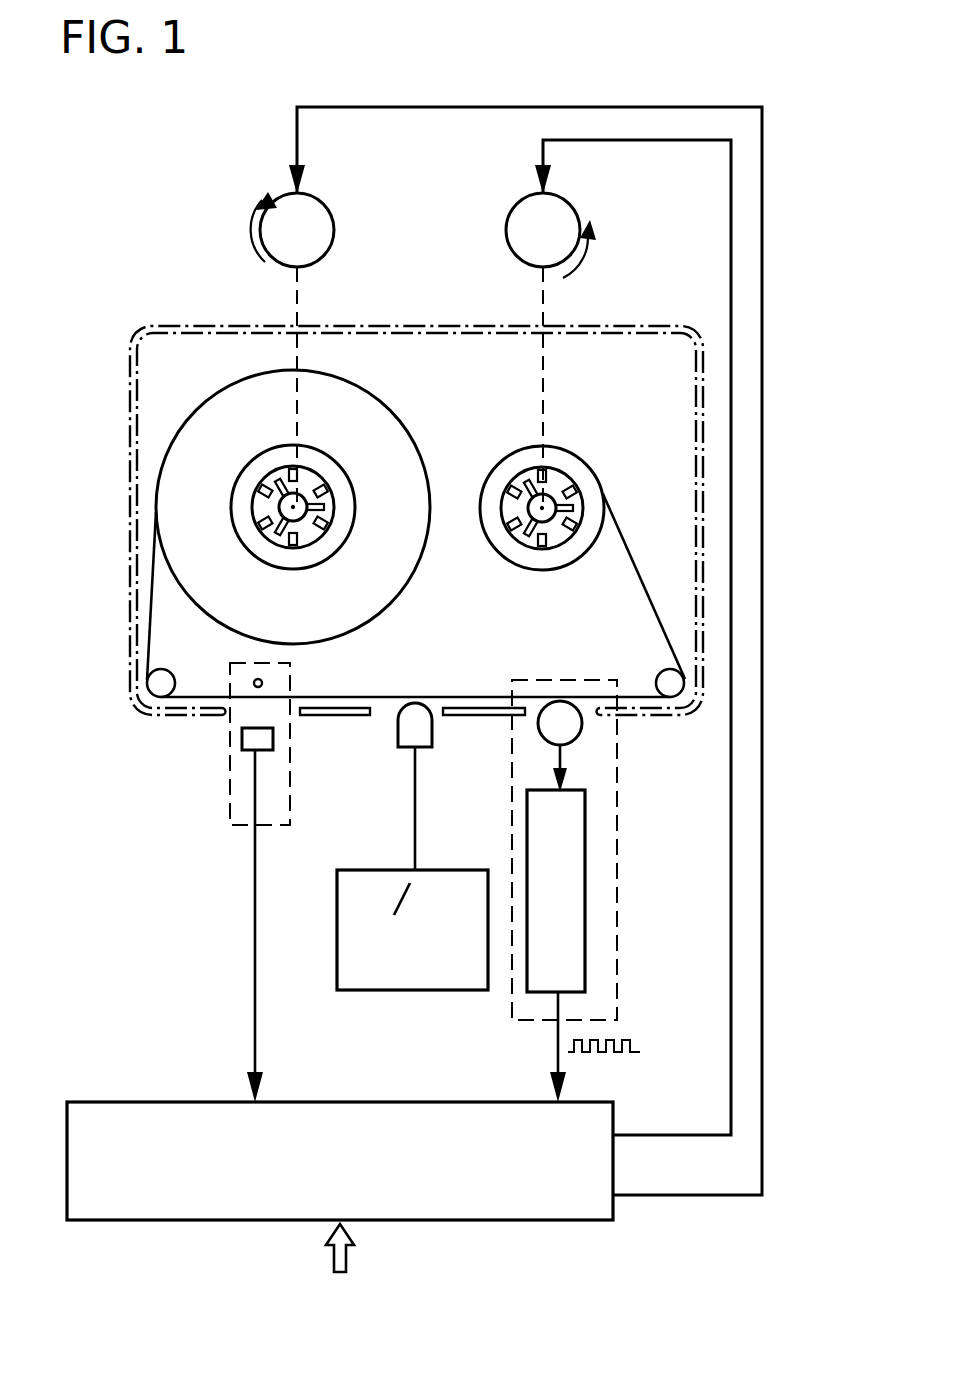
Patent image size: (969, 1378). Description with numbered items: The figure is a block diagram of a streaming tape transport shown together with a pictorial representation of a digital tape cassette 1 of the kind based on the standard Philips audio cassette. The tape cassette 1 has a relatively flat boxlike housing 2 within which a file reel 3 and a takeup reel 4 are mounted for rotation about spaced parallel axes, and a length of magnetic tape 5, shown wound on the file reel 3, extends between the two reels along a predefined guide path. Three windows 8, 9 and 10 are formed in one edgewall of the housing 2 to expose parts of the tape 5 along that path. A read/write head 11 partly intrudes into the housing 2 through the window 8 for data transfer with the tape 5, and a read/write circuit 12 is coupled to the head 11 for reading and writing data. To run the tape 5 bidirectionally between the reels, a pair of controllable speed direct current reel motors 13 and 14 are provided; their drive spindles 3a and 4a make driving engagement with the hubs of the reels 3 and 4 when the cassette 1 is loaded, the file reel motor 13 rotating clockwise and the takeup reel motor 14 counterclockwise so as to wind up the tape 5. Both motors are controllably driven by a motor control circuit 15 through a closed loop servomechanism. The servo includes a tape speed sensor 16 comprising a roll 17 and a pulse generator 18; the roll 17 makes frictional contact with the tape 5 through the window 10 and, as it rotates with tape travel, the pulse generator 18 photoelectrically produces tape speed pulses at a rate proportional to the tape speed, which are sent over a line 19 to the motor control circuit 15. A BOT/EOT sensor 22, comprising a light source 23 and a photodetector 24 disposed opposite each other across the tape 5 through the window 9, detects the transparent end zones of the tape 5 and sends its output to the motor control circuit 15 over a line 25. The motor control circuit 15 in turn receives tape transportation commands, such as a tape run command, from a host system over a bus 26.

The tape cassette 1 is at (381, 542).
The cassette housing 2 is at (128, 553).
The file reel 3 is at (340, 470).
The drive spindle 3a is at (332, 503).
The takeup reel 4 is at (568, 461).
The drive spindle 4a is at (560, 498).
The magnetic tape 5 is at (400, 568).
The window 8 is at (440, 716).
The window 9 is at (224, 722).
The window 10 is at (612, 720).
The read/write head 11 is at (397, 736).
The read/write circuit 12 is at (438, 870).
The file reel motor 13 is at (334, 232).
The takeup reel motor 14 is at (506, 234).
The motor control circuit 15 is at (398, 1100).
The tape speed sensor 16 is at (619, 864).
The roll 17 is at (558, 700).
The pulse generator 18 is at (586, 893).
The line 19 is at (556, 1046).
The BOT/EOT sensor 22 is at (229, 794).
The light source 23 is at (263, 683).
The photodetector 24 is at (243, 752).
The line 25 is at (258, 1062).
The bus 26 is at (348, 1258).